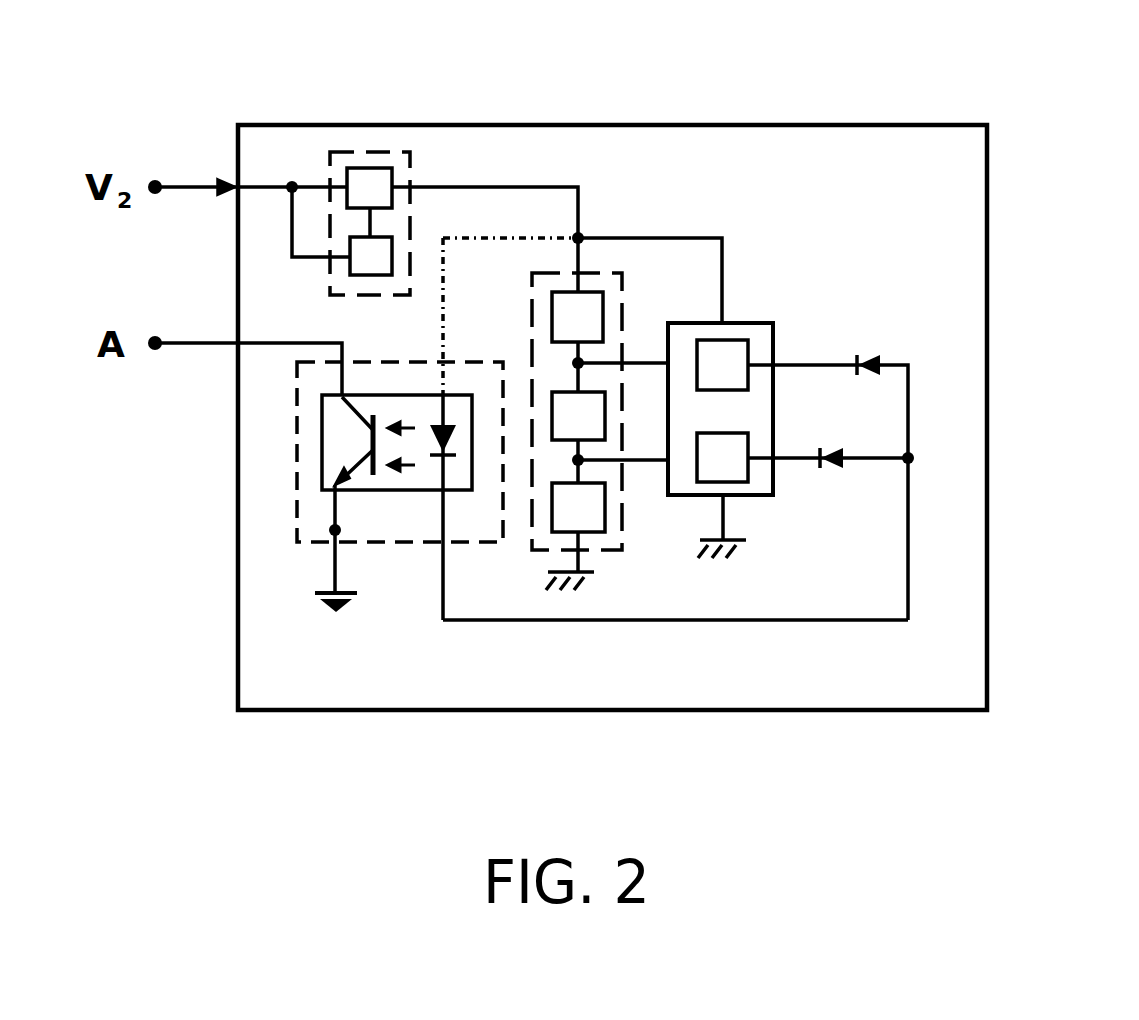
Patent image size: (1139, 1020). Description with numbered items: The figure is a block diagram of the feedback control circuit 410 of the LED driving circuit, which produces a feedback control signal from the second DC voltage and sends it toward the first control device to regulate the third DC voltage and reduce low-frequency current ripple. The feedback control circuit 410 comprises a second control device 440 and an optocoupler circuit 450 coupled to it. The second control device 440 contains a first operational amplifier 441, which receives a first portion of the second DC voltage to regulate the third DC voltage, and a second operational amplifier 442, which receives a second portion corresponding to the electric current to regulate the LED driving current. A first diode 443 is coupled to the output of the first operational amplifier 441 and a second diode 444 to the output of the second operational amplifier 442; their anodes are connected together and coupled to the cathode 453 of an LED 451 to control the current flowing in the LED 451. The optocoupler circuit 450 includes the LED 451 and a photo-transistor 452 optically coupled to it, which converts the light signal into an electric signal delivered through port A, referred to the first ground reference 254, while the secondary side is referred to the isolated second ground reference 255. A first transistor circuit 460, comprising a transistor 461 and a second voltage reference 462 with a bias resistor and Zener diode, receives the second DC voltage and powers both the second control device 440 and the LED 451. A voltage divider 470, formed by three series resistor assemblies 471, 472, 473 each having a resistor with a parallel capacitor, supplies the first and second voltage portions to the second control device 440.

The feedback control circuit 410 is at (990, 588).
The second control device 440 is at (742, 320).
The first operational amplifier 441 is at (752, 345).
The second operational amplifier 442 is at (748, 482).
The first diode 443 is at (878, 360).
The second diode 444 is at (835, 468).
The optocoupler circuit 450 is at (290, 430).
The LED 451 is at (460, 390).
The photo-transistor 452 is at (350, 445).
The cathode 453 is at (443, 458).
The first transistor circuit 460 is at (412, 150).
The transistor 461 is at (368, 165).
The second voltage reference 462 is at (372, 278).
The voltage divider 470 is at (528, 558).
The resistor assembly 471 is at (602, 295).
The resistor assembly 472 is at (604, 390).
The resistor assembly 473 is at (605, 527).
The first ground reference 254 is at (315, 590).
The second ground reference 255 is at (733, 545).